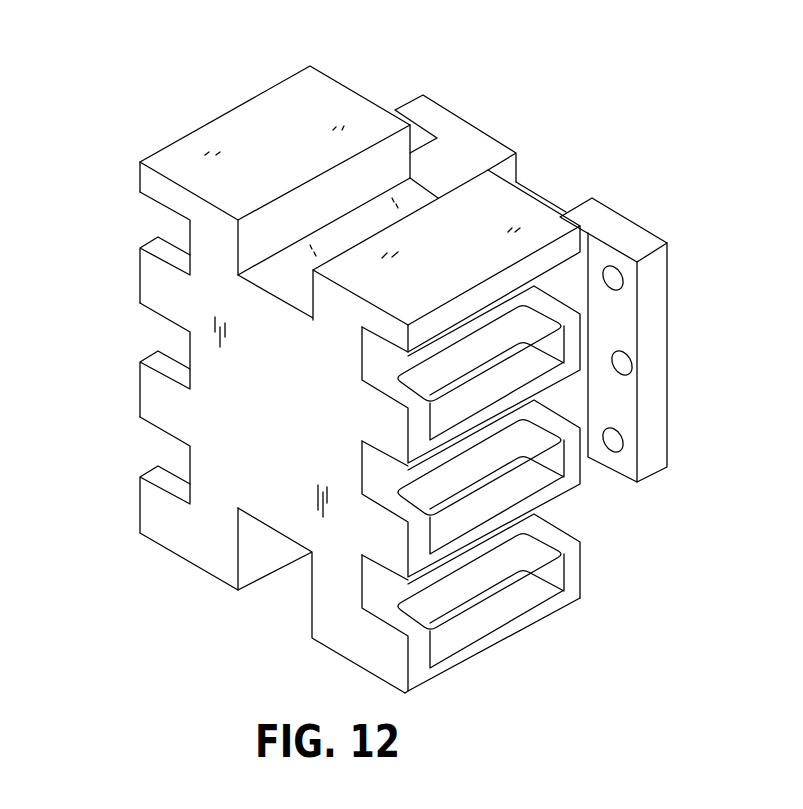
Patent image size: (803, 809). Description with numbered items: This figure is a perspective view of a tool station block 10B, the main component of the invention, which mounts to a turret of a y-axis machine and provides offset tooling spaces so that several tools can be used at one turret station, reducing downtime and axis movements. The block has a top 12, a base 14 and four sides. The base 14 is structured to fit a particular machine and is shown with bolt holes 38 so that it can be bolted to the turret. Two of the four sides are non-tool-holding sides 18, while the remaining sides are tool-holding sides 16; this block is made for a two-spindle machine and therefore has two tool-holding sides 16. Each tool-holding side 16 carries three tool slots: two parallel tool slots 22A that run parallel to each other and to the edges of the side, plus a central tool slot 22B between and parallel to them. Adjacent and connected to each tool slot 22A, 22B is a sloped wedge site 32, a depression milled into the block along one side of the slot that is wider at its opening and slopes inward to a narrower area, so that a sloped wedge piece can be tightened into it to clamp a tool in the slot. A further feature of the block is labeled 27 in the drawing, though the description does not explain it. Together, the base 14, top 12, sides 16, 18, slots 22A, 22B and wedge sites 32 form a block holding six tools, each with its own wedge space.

The tool station block 10B is at (521, 93).
The top 12 is at (285, 418).
The base 14 is at (645, 233).
The tool-holding side 16 is at (496, 657).
The non-tool-holding side 18 is at (192, 538).
The tool slots 22A is at (152, 220).
The central tool slot 22B is at (152, 337).
The foot 27 is at (292, 592).
The sloped wedge site 32 is at (578, 466).
The bolt holes 38 is at (626, 370).